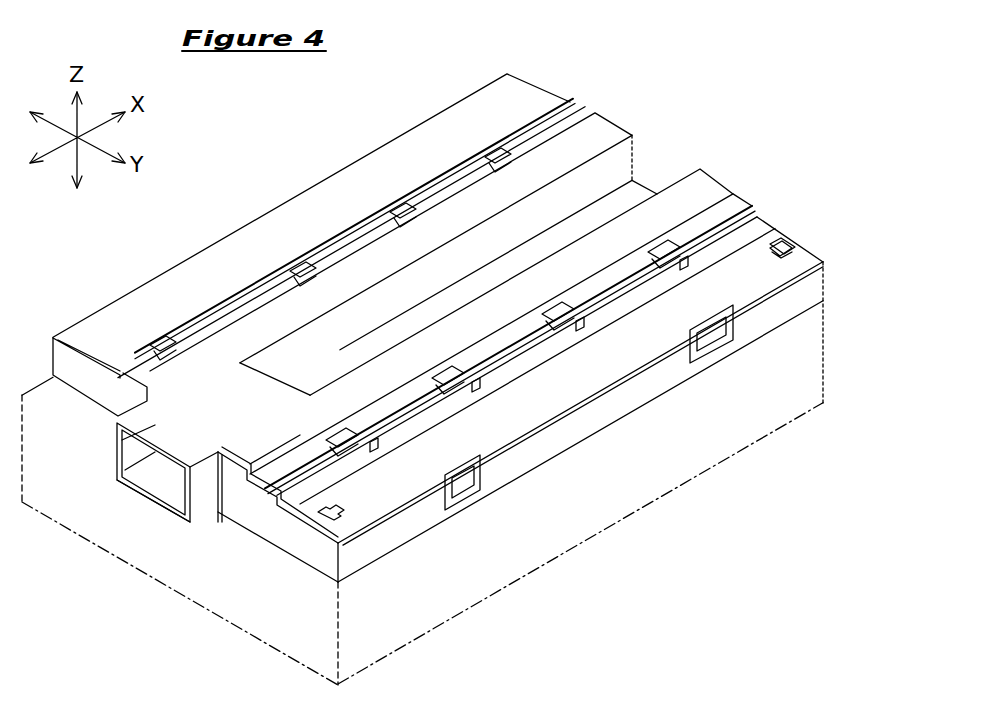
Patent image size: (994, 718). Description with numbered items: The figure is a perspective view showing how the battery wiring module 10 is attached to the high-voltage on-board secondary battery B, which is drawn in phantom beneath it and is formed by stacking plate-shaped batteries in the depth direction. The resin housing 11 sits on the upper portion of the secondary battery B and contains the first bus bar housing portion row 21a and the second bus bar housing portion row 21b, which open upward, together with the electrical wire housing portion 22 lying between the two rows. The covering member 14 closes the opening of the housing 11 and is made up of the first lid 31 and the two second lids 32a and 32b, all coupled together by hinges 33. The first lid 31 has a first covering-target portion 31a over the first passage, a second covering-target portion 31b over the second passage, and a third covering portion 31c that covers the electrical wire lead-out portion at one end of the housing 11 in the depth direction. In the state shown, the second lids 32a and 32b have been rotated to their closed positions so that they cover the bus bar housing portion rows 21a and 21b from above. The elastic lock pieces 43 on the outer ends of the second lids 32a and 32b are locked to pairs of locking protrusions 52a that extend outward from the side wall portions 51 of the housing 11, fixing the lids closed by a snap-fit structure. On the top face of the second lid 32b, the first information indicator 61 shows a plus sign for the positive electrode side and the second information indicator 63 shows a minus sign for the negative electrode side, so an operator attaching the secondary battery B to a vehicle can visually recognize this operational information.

The battery wiring module 10 is at (542, 98).
The housing 11 is at (826, 285).
The covering member 14 is at (789, 238).
The first bus bar housing portion row 21a is at (63, 363).
The second bus bar housing portion row 21b is at (310, 545).
The electrical wire housing portion 22 is at (165, 495).
The first lid 31 is at (608, 118).
The first covering-target portion 31a is at (368, 250).
The second covering-target portion 31b is at (472, 308).
The third covering portion 31c is at (118, 456).
The second lid 32a is at (378, 165).
The second lid 32b is at (605, 362).
The hinge 33 is at (180, 345).
The elastic lock piece 43 is at (488, 480).
The side wall portion 51 is at (566, 436).
The locking protrusion 52a is at (480, 497).
The first information indicator 61 is at (330, 512).
The second information indicator 63 is at (770, 256).
The secondary battery B is at (826, 372).